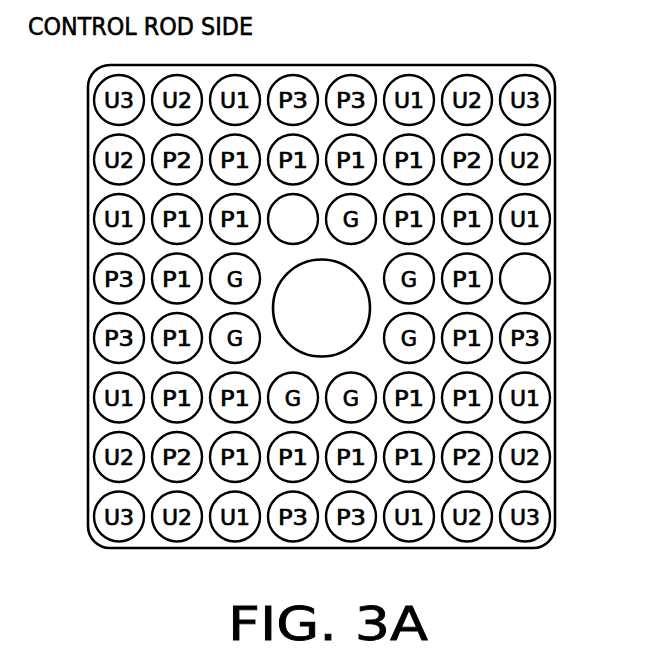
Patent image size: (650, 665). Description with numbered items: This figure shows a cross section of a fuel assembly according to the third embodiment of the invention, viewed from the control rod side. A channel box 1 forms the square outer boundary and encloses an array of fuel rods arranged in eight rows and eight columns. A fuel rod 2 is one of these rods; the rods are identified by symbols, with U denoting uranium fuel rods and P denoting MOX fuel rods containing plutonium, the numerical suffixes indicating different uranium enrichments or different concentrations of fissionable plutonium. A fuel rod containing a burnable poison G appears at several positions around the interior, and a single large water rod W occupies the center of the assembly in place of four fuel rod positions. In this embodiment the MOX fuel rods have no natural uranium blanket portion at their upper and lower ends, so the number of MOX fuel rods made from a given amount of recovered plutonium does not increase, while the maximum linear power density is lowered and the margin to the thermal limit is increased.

The channel box 1 is at (557, 125).
The fuel rod 2 is at (546, 257).
The water rod W is at (321, 308).
The fuel rod containing a burnable poison G is at (293, 219).